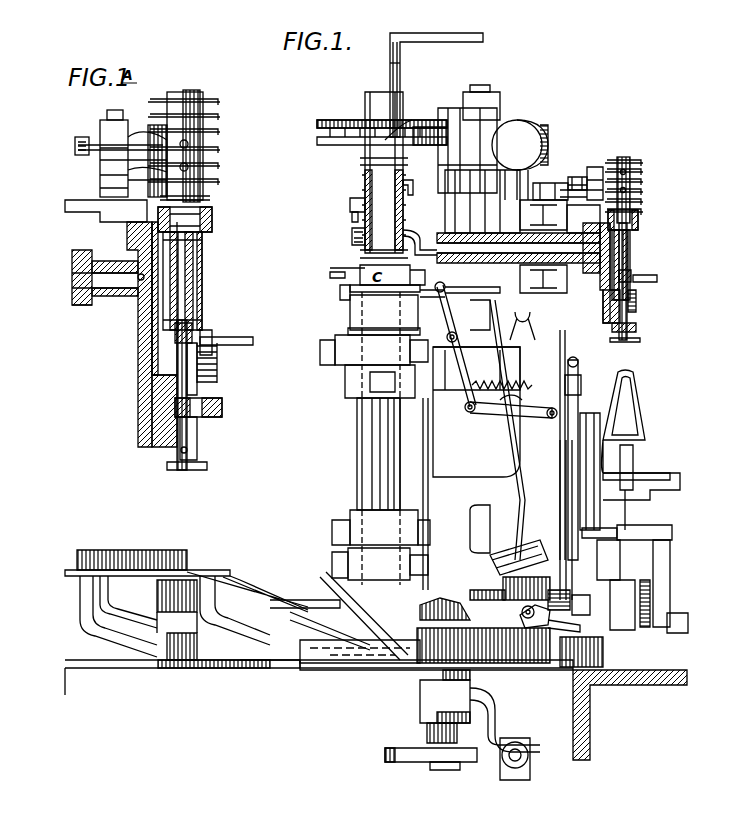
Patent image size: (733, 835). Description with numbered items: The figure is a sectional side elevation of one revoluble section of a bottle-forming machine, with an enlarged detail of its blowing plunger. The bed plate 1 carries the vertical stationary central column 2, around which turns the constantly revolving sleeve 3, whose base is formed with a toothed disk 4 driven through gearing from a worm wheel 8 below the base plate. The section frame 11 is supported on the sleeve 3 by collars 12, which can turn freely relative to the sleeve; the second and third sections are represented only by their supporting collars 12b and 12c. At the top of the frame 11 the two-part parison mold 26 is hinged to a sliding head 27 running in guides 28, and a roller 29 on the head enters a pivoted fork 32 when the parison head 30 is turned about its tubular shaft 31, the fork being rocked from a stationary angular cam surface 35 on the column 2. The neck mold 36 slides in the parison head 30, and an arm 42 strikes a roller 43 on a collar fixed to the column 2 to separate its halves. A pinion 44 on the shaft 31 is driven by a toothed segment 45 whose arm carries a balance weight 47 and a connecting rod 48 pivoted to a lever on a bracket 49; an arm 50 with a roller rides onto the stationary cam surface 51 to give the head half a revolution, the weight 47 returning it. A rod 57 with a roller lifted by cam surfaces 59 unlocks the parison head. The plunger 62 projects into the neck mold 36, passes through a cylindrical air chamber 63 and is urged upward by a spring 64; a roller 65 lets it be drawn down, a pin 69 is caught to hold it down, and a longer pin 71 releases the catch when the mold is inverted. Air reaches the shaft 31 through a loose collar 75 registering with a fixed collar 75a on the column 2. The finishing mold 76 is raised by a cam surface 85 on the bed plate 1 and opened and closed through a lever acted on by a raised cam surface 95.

In FIG. 1, the bed plate 1 is at (280, 682).
In FIG. 1, the central column 2 is at (365, 173).
In FIG. 1, the sleeve 3 is at (372, 440).
In FIG. 1, the toothed disk 4 is at (323, 682).
In FIG. 1, the worm wheel 8 is at (418, 748).
In FIG. 1A, the frame 11 is at (80, 305).
In FIG. 1, the frame 11 is at (490, 438).
In FIG. 1, the collars 12 is at (320, 572).
In FIG. 1, the supporting collar 12b is at (374, 457).
In FIG. 1, the supporting collar 12c is at (405, 518).
In FIG. 1A, the parison mold 26 is at (190, 100).
In FIG. 1, the parison mold 26 is at (628, 158).
In FIG. 1A, the sliding head 27 is at (78, 147).
In FIG. 1, the sliding head 27 is at (595, 168).
In FIG. 1A, the guides 28 is at (75, 210).
In FIG. 1, the guides 28 is at (550, 183).
In FIG. 1, the roller 29 is at (578, 178).
In FIG. 1A, the parison head 30 is at (140, 358).
In FIG. 1, the parison head 30 is at (612, 260).
In FIG. 1A, the tubular shaft 31 is at (72, 282).
In FIG. 1, the tubular shaft 31 is at (578, 275).
In FIG. 1, the pivoted fork 32 is at (537, 325).
In FIG. 1, the angular cam surface 35 is at (412, 135).
In FIG. 1A, the neck mold 36 is at (212, 215).
In FIG. 1, the neck mold 36 is at (634, 212).
In FIG. 1, the arm 42 is at (330, 268).
In FIG. 1, the roller 43 is at (345, 290).
In FIG. 1, the toothed pinion 44 is at (425, 250).
In FIG. 1, the toothed segment 45 is at (437, 160).
In FIG. 1, the balance weight 47 is at (520, 120).
In FIG. 1, the connecting rod 48 is at (522, 458).
In FIG. 1, the bracket 49 is at (492, 560).
In FIG. 1, the arm 50 is at (555, 600).
In FIG. 1, the cam surface 51 is at (468, 600).
In FIG. 1, the rod 57 is at (520, 410).
In FIG. 1, the cam surfaces 59 is at (440, 598).
In FIG. 1A, the plunger 62 is at (190, 268).
In FIG. 1, the plunger 62 is at (630, 240).
In FIG. 1A, the cylindrical chamber 63 is at (193, 288).
In FIG. 1, the cylindrical chamber 63 is at (634, 252).
In FIG. 1A, the spring 64 is at (210, 372).
In FIG. 1, the spring 64 is at (636, 302).
In FIG. 1A, the roller 65 is at (212, 405).
In FIG. 1, the roller 65 is at (633, 330).
In FIG. 1A, the pin 69 is at (192, 330).
In FIG. 1, the pin 69 is at (633, 275).
In FIG. 1A, the pin 71 is at (253, 341).
In FIG. 1, the pin 71 is at (657, 279).
In FIG. 1, the collar 75 is at (352, 237).
In FIG. 1, the annular collar 75a is at (350, 207).
In FIG. 1, the finishing mold 76 is at (635, 390).
In FIG. 1, the cam surface 85 is at (330, 600).
In FIG. 1, the cam surface 95 is at (222, 565).